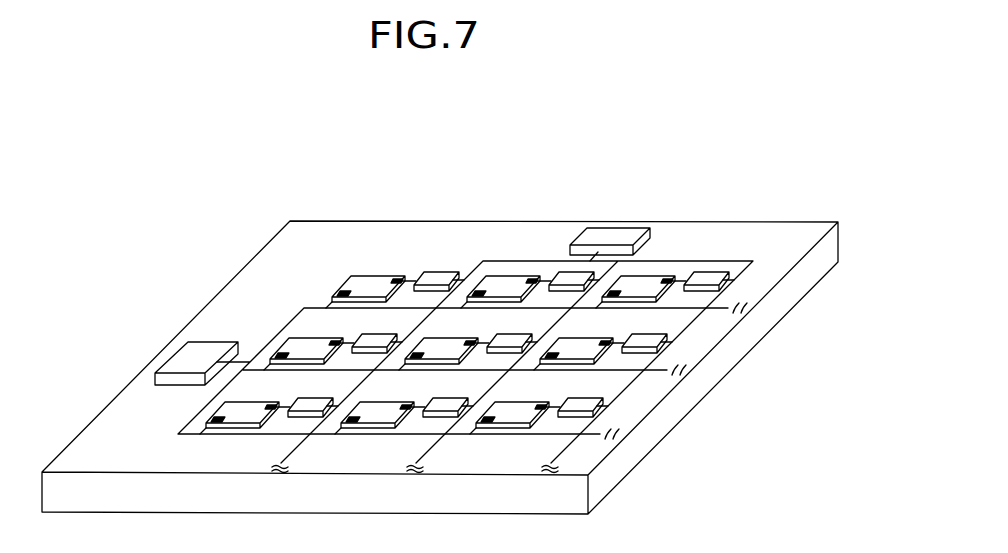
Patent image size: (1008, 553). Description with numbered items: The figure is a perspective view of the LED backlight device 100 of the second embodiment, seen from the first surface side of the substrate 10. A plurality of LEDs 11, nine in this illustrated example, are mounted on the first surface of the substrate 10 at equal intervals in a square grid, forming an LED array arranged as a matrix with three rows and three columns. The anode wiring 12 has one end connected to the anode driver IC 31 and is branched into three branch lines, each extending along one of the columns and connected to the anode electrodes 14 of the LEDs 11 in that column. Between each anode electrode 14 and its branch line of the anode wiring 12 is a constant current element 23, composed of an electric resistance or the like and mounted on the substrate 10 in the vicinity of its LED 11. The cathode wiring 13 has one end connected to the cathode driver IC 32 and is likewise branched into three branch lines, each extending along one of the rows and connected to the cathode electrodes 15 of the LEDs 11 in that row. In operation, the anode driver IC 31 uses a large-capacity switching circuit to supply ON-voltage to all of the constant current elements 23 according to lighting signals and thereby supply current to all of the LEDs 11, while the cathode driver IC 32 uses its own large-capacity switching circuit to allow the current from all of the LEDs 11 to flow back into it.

The LED backlight device 100 is at (681, 158).
The substrate 10 is at (618, 468).
The LED 11 is at (363, 282).
The anode wiring 12 is at (690, 260).
The cathode wiring 13 is at (247, 362).
The anode electrode 14 is at (402, 279).
The cathode electrode 15 is at (335, 293).
The constant current element 23 is at (440, 276).
The anode driver IC 31 is at (619, 240).
The cathode driver IC 32 is at (174, 352).